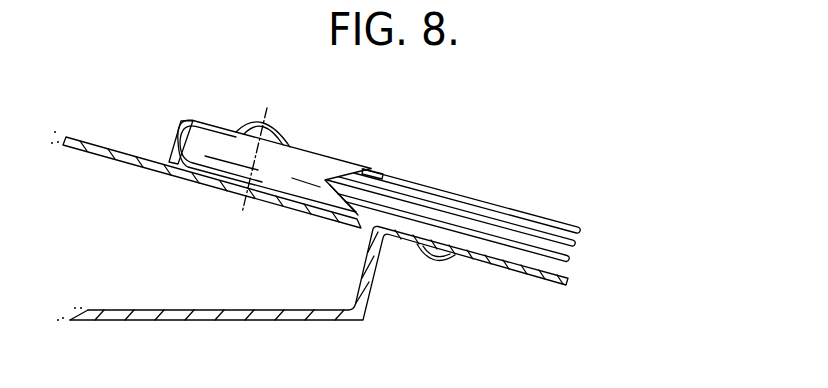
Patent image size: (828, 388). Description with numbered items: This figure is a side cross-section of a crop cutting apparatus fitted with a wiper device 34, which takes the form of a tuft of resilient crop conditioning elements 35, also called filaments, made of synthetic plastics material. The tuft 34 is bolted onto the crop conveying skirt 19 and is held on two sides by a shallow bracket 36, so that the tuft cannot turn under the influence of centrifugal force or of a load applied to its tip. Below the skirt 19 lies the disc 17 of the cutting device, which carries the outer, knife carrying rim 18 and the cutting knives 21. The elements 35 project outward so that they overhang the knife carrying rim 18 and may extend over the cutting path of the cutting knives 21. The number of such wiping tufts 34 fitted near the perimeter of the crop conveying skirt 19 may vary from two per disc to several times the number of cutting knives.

The disc 17 is at (224, 309).
The outer rim 18 is at (453, 258).
The crop conveying skirt 19 is at (92, 140).
The cutting knives 21 is at (529, 278).
The wiper device 34 is at (398, 142).
The resilient crop conditioning elements 35 is at (497, 222).
The shallow bracket 36 is at (172, 121).